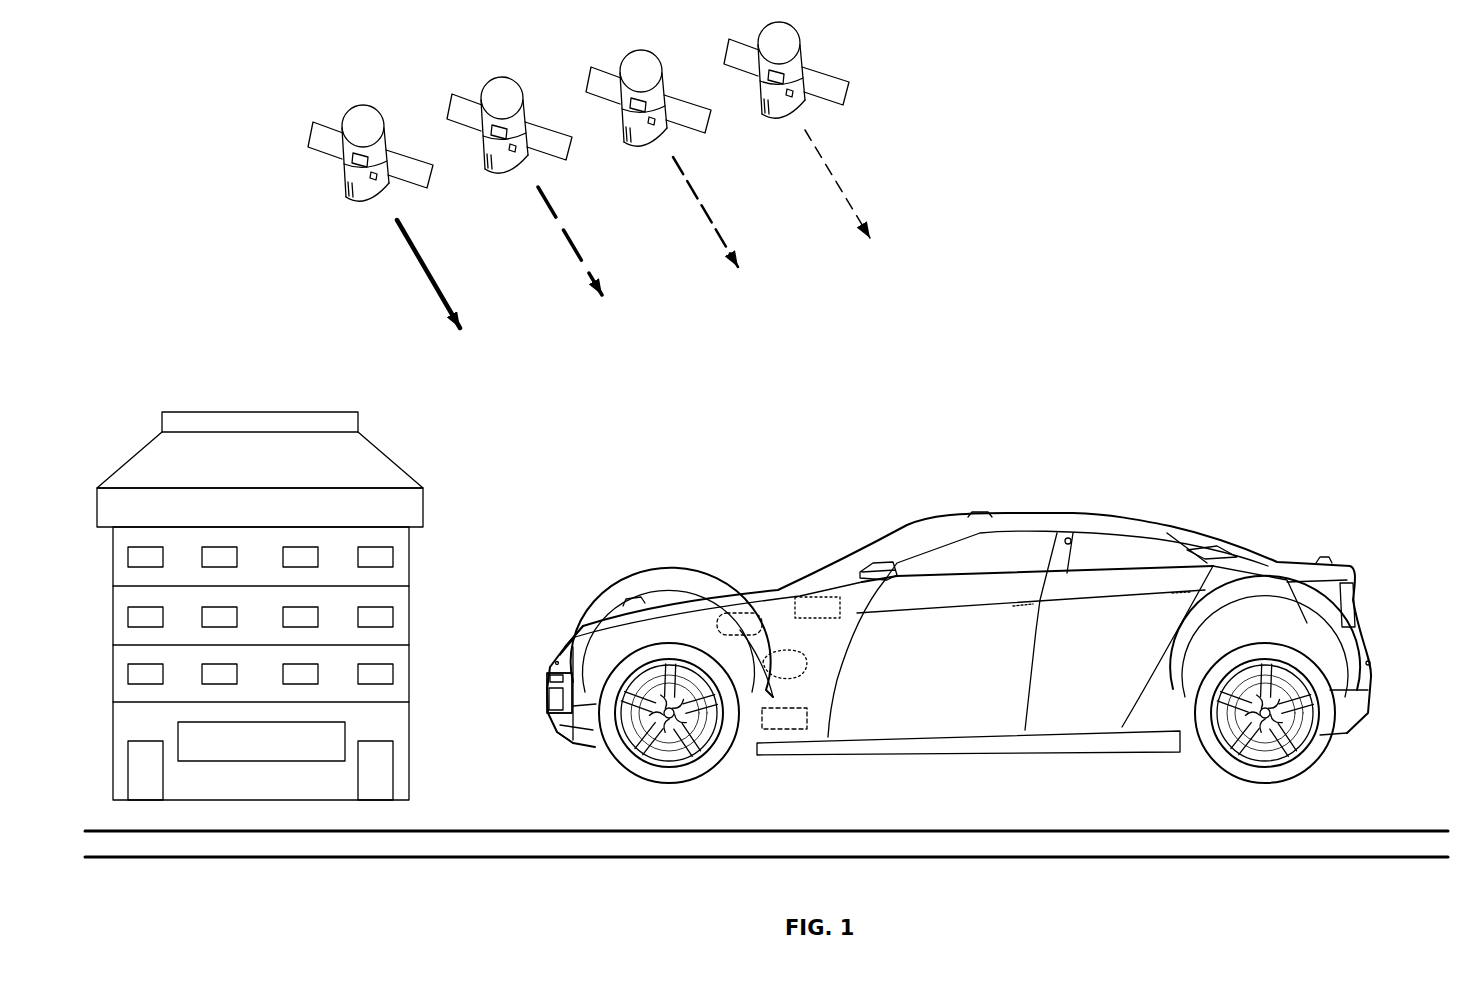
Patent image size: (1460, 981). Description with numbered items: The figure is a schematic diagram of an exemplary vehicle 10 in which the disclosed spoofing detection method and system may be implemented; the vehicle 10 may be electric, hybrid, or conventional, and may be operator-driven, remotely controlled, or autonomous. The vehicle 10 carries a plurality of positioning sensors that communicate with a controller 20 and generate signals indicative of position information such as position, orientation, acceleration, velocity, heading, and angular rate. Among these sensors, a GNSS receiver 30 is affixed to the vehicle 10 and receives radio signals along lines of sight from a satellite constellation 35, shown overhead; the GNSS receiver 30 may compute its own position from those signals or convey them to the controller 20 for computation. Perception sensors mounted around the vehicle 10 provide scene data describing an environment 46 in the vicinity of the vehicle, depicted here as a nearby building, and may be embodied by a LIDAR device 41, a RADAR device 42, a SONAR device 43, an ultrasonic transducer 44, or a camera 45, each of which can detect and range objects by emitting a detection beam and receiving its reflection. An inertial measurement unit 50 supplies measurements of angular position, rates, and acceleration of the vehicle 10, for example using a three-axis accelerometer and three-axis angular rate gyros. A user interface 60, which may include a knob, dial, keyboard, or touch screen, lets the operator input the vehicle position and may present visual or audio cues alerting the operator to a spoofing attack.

The vehicle 10 is at (1108, 396).
The controller 20 is at (815, 595).
The GNSS receiver 30 is at (739, 611).
The satellite constellation 35 is at (538, 67).
The LIDAR device 41 is at (981, 512).
The RADAR device 42 is at (548, 712).
The SONAR device 43 is at (558, 631).
The ultrasonic transducer 44 is at (632, 597).
The camera 45 is at (546, 655).
The environment 46 is at (215, 386).
The inertial measurement unit 50 is at (806, 672).
The user interface 60 is at (787, 729).